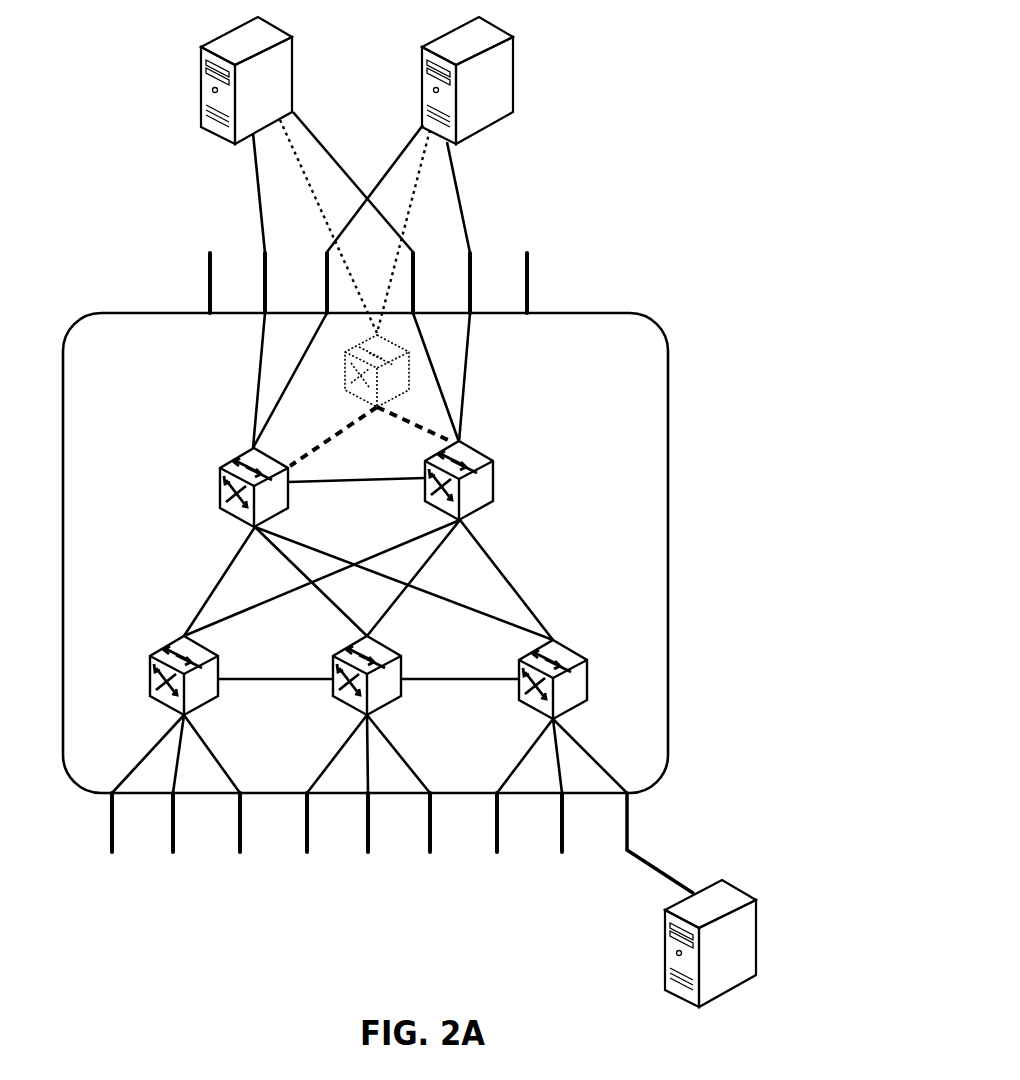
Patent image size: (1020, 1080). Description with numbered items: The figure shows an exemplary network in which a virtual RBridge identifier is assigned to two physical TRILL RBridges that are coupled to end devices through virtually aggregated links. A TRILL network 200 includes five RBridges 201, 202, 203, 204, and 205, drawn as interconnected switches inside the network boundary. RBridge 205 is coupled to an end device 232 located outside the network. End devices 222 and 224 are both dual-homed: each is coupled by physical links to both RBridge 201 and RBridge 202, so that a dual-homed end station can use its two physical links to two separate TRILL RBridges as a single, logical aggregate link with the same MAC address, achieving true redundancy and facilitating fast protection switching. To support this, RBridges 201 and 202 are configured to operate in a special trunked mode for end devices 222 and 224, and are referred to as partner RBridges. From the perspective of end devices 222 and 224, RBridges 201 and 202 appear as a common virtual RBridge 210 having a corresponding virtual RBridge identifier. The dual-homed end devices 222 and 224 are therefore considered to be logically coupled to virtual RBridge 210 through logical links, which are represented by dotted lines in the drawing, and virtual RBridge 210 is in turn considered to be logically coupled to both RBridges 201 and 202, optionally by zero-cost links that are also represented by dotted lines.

The TRILL network 200 is at (637, 313).
The RBridge 201 is at (222, 512).
The RBridge 202 is at (428, 503).
The RBridge 203 is at (154, 700).
The RBridge 204 is at (336, 698).
The RBridge 205 is at (523, 706).
The virtual RBridge 210 is at (343, 395).
The end device 222 is at (292, 82).
The end device 224 is at (513, 92).
The end device 232 is at (757, 925).